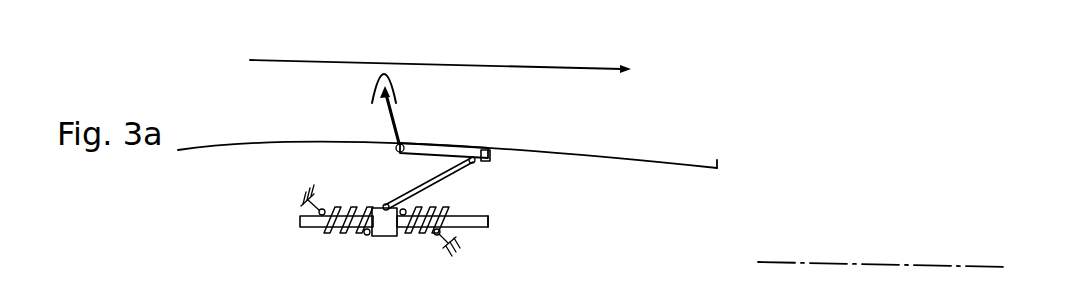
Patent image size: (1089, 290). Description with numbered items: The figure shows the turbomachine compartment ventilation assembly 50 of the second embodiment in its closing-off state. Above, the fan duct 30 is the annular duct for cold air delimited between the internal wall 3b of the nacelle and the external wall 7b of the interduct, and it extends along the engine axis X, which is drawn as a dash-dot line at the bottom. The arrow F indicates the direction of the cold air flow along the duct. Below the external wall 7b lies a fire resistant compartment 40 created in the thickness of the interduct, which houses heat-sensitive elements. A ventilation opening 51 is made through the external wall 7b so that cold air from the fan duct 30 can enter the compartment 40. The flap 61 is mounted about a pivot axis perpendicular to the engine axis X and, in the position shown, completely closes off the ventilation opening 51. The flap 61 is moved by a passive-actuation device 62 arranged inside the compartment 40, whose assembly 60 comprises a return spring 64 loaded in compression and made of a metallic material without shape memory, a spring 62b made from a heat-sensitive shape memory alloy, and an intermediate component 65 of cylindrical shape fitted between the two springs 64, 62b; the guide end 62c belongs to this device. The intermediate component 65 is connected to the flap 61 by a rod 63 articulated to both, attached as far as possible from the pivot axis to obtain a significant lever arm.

The fan duct 30 is at (656, 140).
The external wall of the interduct 7b is at (788, 120).
The internal wall of the nacelle 3b is at (717, 168).
The fire resistant compartment 40 is at (729, 219).
The ventilation assembly 50 is at (353, 120).
The ventilation opening 51 is at (440, 143).
The actuator assembly 60 is at (376, 184).
The flap 61 is at (489, 148).
The passive-actuation device 62 is at (501, 234).
The spring made from a heat-sensitive shape memory alloy 62b is at (428, 236).
The rail end 62c is at (489, 216).
The rod 63 is at (445, 179).
The return spring 64 is at (330, 229).
The intermediate component 65 is at (380, 237).
The flow direction F is at (556, 67).
The engine axis X is at (946, 263).